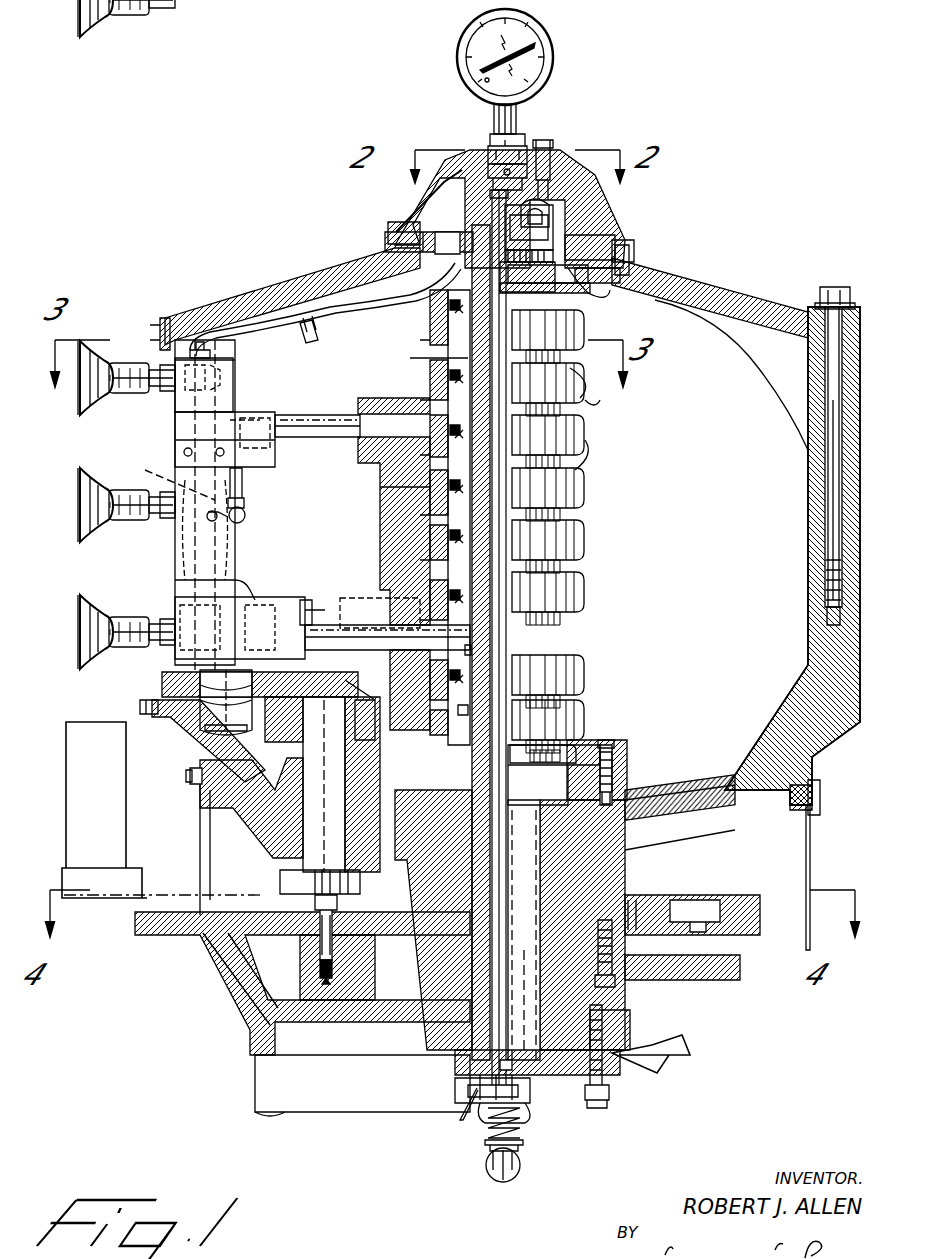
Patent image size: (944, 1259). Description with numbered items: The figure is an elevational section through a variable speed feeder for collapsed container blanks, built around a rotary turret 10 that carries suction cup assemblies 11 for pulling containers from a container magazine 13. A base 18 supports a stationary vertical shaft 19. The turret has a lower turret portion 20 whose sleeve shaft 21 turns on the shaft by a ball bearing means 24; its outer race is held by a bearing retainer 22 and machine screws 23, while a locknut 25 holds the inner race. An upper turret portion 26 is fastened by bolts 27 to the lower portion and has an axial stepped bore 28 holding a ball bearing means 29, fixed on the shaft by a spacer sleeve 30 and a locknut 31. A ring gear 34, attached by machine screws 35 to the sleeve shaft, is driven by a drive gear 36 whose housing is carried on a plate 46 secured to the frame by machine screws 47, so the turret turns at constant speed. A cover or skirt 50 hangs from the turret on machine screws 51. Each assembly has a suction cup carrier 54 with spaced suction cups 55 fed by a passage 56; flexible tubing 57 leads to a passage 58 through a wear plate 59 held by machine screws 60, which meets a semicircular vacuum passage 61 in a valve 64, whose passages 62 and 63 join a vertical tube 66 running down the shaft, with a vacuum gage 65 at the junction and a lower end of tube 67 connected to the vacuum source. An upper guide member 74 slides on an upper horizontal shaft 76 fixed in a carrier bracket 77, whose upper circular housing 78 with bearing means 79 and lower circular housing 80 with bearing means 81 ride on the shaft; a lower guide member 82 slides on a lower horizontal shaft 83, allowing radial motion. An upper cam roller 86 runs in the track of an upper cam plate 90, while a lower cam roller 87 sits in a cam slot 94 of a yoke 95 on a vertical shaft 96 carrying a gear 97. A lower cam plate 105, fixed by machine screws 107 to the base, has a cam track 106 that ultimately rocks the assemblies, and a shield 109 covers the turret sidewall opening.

The rotary turret 10 is at (754, 285).
The suction cup assembly 11 is at (235, 385).
The container magazine 13 is at (90, 905).
The base 18 is at (245, 1008).
The stationary vertical shaft 19 is at (487, 637).
The lower turret portion 20 is at (852, 648).
The sleeve shaft 21 is at (670, 842).
The bearing retainer 22 is at (630, 745).
The machine screws 23 is at (612, 740).
The ball bearing means 24 is at (612, 780).
The locknut 25 is at (528, 752).
The upper turret portion 26 is at (848, 515).
The bolts 27 is at (838, 285).
The axial stepped bore 28 is at (555, 290).
The ball bearing means 29 is at (460, 283).
The spacer sleeve 30 is at (422, 359).
The locknut 31 is at (528, 280).
The ring gear 34 is at (635, 985).
The machine screws 35 is at (605, 990).
The drive gear 36 is at (722, 980).
The plate 46 is at (680, 1072).
The machine screws 47 is at (600, 1100).
The cover or skirt 50 is at (812, 855).
The machine screws 51 is at (818, 800).
The suction cup carrier 54 is at (175, 575).
The suction cups 55 is at (105, 560).
The passage 56 is at (166, 474).
The flexible tubing 57 is at (343, 302).
The passage 58 is at (420, 250).
The wear plate 59 is at (600, 237).
The machine screws 60 is at (625, 242).
The semicircular vacuum passage 61 is at (400, 223).
The passage 62 is at (450, 218).
The passage 63 is at (477, 174).
The valve 64 is at (568, 212).
The vacuum gage 65 is at (553, 60).
The vertical tube 66 is at (585, 440).
The lower end of tube 67 is at (495, 1167).
The upper guide member 74 is at (265, 468).
The upper horizontal shaft 76 is at (320, 430).
The carrier bracket 77 is at (395, 535).
The upper circular housing 78 is at (615, 490).
The bearing means 79 is at (387, 493).
The lower circular housing 80 is at (615, 680).
The bearing means 81 is at (462, 718).
The lower guide member 82 is at (260, 610).
The lower horizontal shaft 83 is at (333, 621).
The upper cam roller 86 is at (190, 700).
The lower cam roller 87 is at (210, 743).
The upper cam plate 90 is at (160, 678).
The cam slot 94 is at (268, 732).
The yoke 95 is at (378, 700).
The vertical shaft 96 is at (310, 835).
The gear 97 is at (280, 875).
The lower cam plate 105 is at (215, 925).
The cam track 106 is at (238, 945).
The machine screws 107 is at (320, 985).
The shield 109 is at (158, 317).